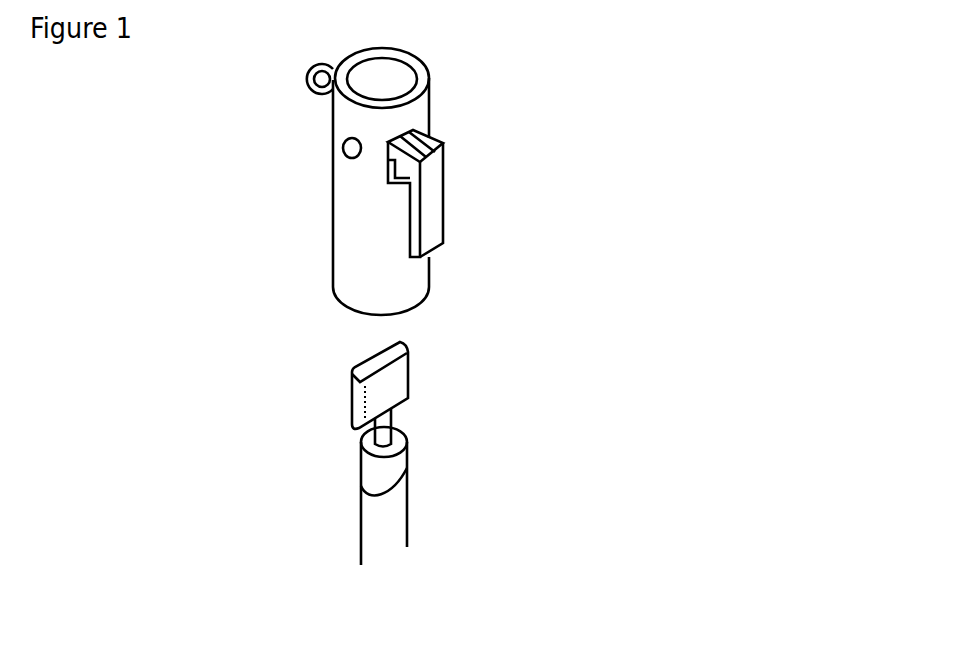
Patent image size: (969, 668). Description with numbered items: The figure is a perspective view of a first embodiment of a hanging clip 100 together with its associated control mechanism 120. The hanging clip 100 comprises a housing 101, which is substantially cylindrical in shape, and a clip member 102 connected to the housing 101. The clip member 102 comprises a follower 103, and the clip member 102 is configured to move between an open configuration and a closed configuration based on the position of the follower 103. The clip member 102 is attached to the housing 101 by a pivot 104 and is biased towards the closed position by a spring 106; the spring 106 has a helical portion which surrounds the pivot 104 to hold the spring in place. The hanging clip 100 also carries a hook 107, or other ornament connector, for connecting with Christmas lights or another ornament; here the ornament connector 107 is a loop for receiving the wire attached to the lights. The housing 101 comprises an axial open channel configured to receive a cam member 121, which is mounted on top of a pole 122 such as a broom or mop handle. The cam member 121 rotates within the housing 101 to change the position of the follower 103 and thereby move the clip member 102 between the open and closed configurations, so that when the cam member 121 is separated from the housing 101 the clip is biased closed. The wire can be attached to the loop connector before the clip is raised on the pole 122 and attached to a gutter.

The hanging clip 100 is at (133, 375).
The housing 101 is at (357, 255).
The clip member 102 is at (437, 203).
The follower 103 is at (443, 165).
The pivot 104 is at (343, 150).
The spring 106 is at (452, 120).
The hook 107 is at (307, 80).
The control mechanism 120 is at (250, 484).
The cam member 121 is at (407, 388).
The pole 122 is at (393, 512).